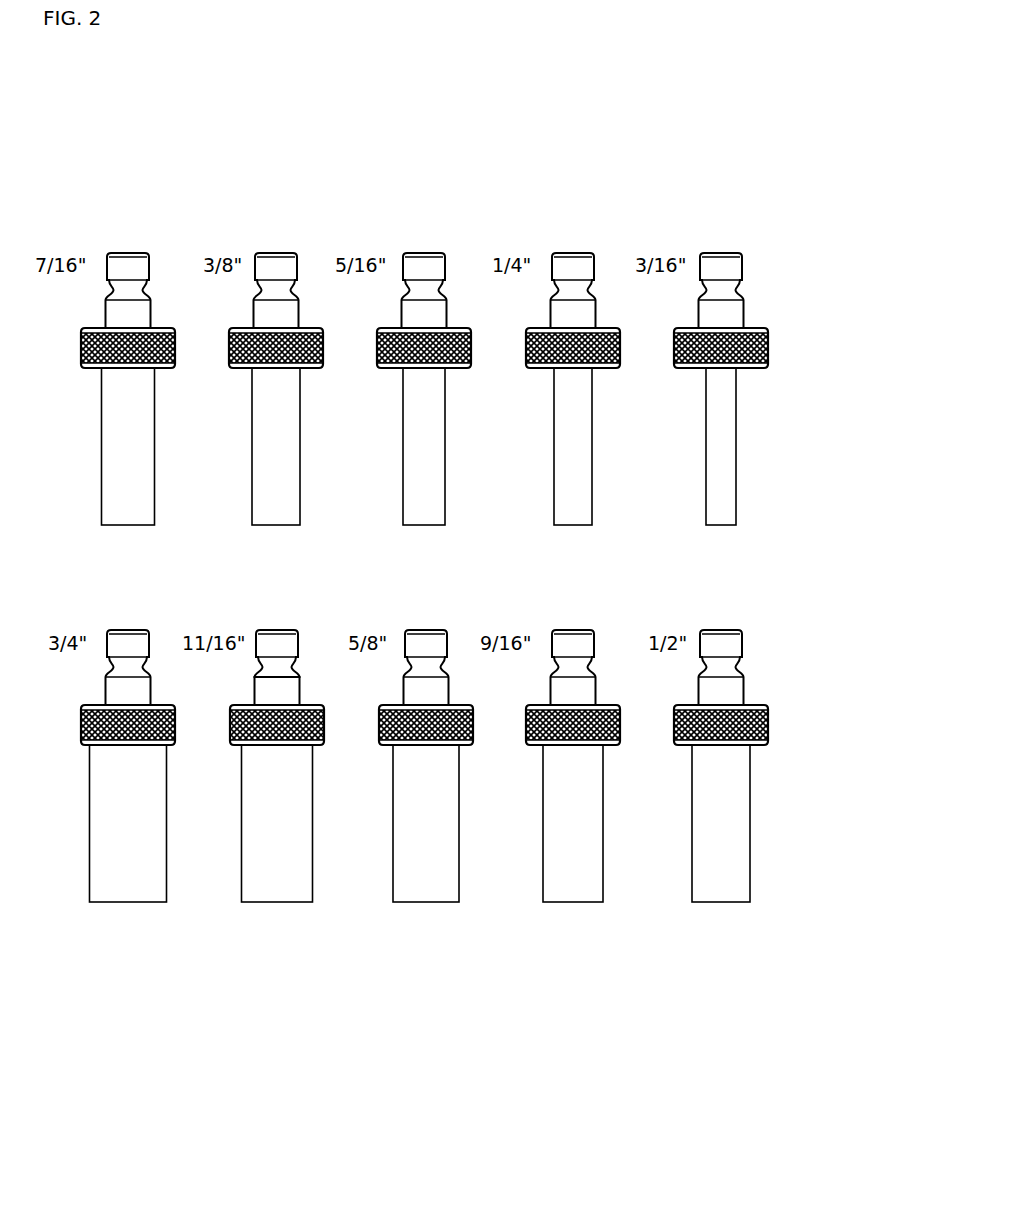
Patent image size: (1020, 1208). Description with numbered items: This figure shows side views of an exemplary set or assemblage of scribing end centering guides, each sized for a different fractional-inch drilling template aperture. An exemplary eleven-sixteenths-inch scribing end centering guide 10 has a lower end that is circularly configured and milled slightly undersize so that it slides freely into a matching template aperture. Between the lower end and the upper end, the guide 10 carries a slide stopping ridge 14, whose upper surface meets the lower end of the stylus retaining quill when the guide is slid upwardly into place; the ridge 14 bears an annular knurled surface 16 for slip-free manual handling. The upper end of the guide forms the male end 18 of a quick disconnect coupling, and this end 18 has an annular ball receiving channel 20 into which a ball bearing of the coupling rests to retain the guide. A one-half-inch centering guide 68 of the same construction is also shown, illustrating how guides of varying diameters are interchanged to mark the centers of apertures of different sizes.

The scribing end centering guide 10 is at (277, 812).
The slide stopping ridge 14 is at (313, 705).
The annular knurled surface 16 is at (323, 730).
The male end of quick disconnect coupling 18 is at (275, 692).
The annular ball receiving channel 20 is at (297, 667).
The one-half inch centering guide 68 is at (717, 922).